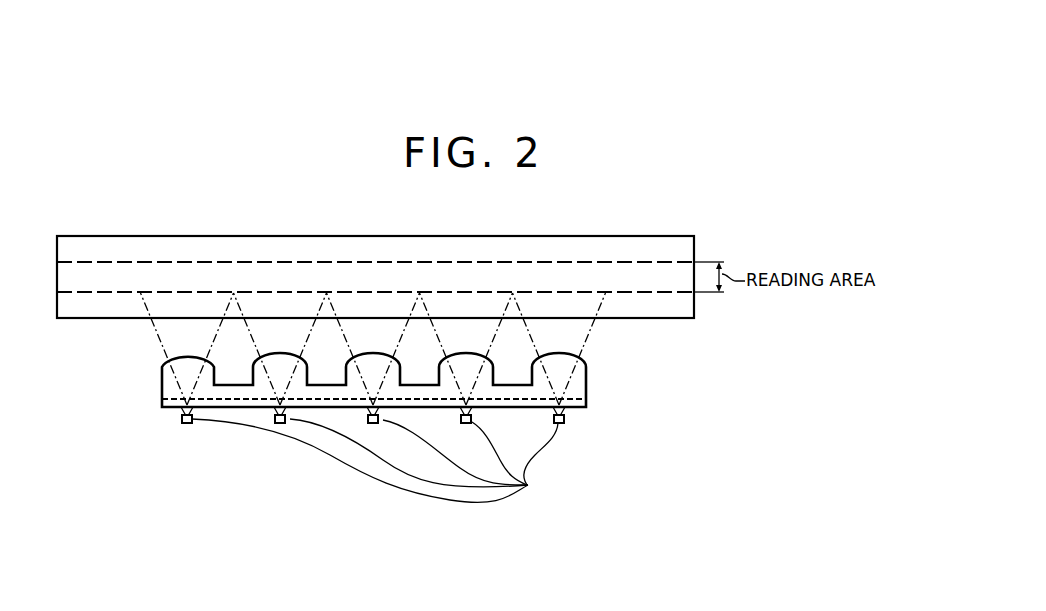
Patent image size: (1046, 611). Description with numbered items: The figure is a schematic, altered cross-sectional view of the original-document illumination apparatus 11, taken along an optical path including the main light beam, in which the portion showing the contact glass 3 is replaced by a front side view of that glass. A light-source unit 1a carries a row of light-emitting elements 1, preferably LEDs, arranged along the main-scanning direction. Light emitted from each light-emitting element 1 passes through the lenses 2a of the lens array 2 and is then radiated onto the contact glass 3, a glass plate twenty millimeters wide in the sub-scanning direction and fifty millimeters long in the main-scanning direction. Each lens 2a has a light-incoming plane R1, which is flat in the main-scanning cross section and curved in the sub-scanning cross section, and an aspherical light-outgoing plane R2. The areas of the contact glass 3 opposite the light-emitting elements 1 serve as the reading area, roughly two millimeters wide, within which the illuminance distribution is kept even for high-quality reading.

The light-emitting element 1 is at (402, 461).
The light-source unit 1a is at (571, 430).
The lens array 2 is at (398, 368).
The lens 2a is at (560, 365).
The contact glass 3 is at (694, 318).
The original-document illumination apparatus 11 is at (314, 473).
The light-incoming plane R1 is at (161, 405).
The light-outgoing plane R2 is at (161, 367).